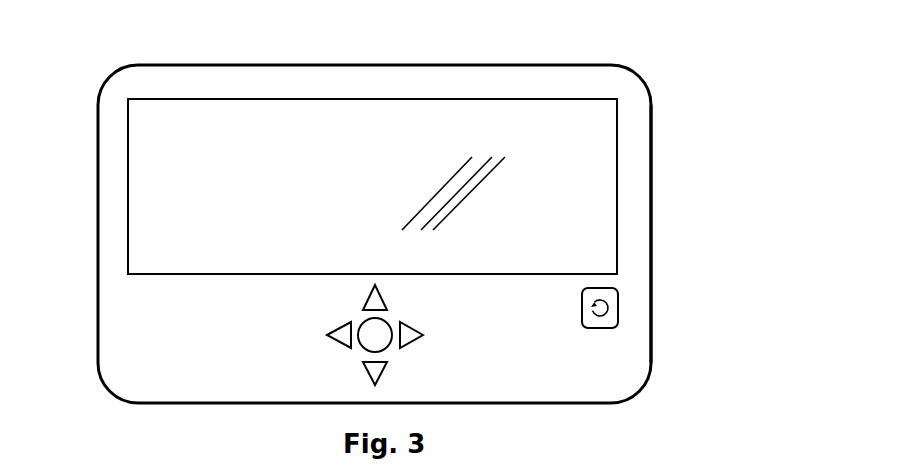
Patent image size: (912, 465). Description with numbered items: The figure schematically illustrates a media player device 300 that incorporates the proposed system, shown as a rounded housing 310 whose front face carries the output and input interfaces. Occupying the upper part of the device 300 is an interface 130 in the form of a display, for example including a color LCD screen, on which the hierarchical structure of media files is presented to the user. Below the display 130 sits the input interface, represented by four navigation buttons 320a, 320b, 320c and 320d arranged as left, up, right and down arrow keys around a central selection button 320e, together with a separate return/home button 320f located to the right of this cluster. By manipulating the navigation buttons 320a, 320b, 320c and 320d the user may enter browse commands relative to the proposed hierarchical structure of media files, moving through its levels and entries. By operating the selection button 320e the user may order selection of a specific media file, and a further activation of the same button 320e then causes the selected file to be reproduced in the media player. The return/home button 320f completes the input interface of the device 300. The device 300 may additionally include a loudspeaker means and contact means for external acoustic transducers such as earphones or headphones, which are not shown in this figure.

The media player device 300 is at (112, 40).
The housing 310 is at (651, 185).
The interface 130 is at (512, 99).
The navigation button 320a is at (327, 336).
The navigation button 320b is at (369, 296).
The navigation button 320c is at (413, 331).
The navigation button 320d is at (383, 367).
The selection button 320e is at (363, 350).
The return/home button 320f is at (618, 305).